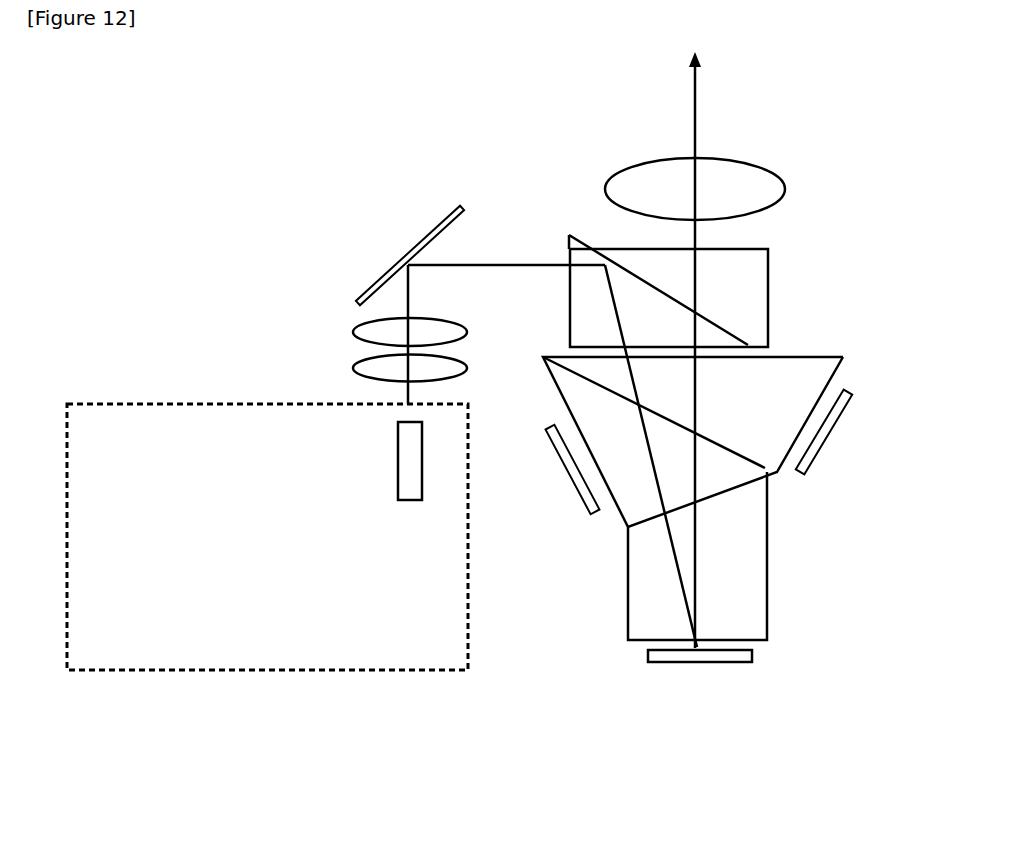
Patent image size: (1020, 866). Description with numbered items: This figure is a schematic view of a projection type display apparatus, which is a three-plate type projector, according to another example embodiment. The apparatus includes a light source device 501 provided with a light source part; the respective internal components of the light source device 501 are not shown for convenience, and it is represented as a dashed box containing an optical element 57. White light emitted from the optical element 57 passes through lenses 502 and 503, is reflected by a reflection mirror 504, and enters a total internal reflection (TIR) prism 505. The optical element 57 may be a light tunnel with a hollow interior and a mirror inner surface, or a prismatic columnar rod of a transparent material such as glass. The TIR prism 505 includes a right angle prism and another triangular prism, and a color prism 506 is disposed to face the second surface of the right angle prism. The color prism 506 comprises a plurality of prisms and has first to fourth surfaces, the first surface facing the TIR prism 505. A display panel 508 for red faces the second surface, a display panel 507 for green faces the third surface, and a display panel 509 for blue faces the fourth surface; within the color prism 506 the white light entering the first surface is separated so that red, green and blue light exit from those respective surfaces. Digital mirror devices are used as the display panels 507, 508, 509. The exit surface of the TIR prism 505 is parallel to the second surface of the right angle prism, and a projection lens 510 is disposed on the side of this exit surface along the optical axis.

The light source device 501 is at (118, 403).
The optical element 57 is at (407, 437).
The lens 502 is at (353, 368).
The lens 503 is at (353, 332).
The reflection mirror 504 is at (455, 208).
The total internal reflection (TIR) prism 505 is at (763, 248).
The color prism 506 is at (822, 357).
The display panel for green 507 is at (672, 660).
The display panel for red 508 is at (597, 512).
The display panel for blue 509 is at (803, 475).
The projection lens 510 is at (785, 190).